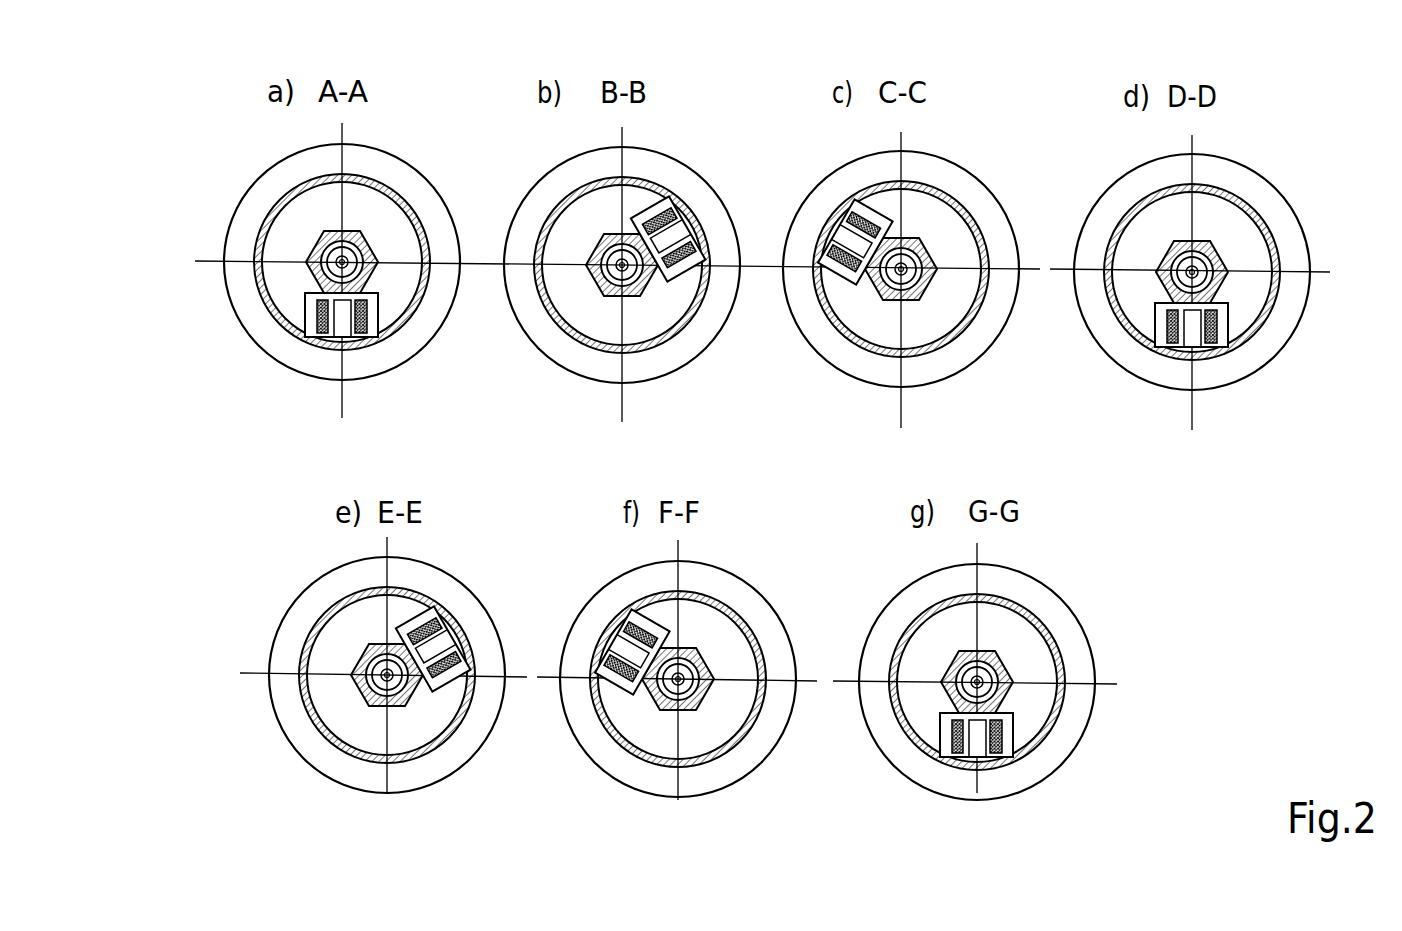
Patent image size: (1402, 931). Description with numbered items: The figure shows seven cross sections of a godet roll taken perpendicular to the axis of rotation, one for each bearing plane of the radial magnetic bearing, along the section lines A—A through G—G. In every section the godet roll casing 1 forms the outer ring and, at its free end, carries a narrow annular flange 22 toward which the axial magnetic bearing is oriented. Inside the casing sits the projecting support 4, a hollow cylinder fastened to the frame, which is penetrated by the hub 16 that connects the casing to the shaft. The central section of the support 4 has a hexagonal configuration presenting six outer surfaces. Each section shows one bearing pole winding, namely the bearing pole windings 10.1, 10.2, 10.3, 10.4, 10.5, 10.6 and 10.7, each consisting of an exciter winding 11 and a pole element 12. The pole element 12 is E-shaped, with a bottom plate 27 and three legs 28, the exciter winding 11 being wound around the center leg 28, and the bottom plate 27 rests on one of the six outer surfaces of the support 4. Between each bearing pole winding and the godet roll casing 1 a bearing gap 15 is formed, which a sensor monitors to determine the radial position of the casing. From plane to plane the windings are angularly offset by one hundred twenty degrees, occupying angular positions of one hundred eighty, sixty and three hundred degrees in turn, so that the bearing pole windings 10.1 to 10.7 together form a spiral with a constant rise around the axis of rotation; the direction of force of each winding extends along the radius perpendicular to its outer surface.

The godet roll casing 1 is at (398, 197).
The support 4 is at (356, 246).
The annular flange 22 is at (233, 233).
The hub 16 is at (368, 270).
The bottom plate 27 is at (330, 384).
The legs 28 is at (375, 320).
The bearing gap 15 is at (338, 342).
The pole element 12 is at (345, 338).
The exciter winding 11 is at (377, 343).
The bearing pole winding 10.1 is at (330, 384).
The bearing pole winding 10.2 is at (688, 283).
The bearing pole winding 10.3 is at (845, 288).
The bearing pole winding 10.4 is at (1235, 317).
The bearing pole winding 10.5 is at (448, 693).
The bearing pole winding 10.6 is at (622, 698).
The bearing pole winding 10.7 is at (1025, 722).